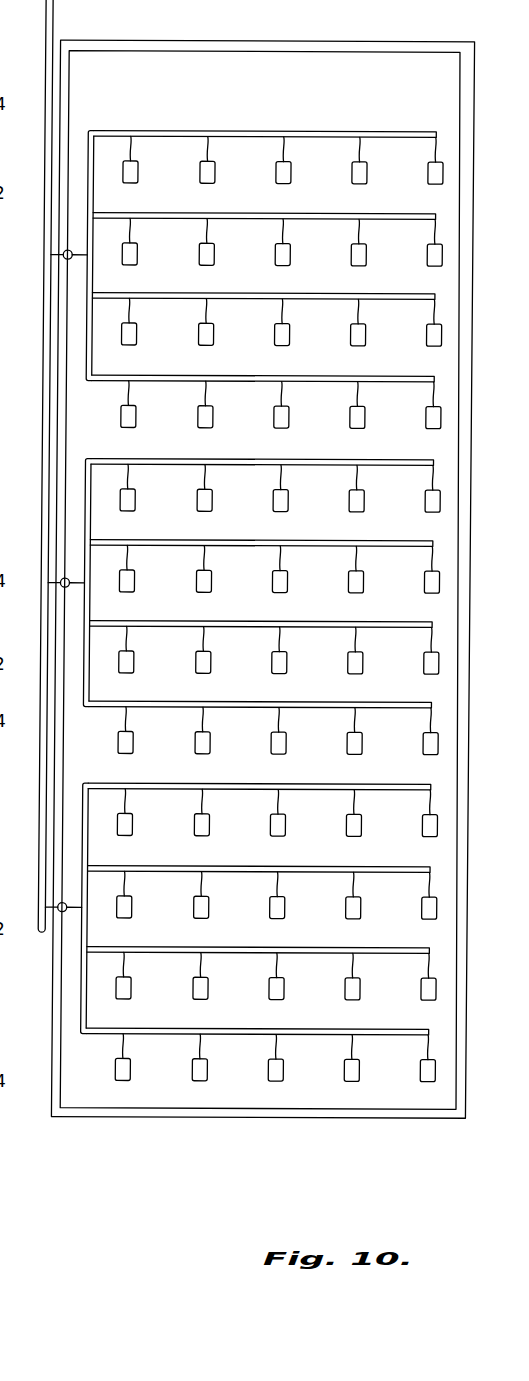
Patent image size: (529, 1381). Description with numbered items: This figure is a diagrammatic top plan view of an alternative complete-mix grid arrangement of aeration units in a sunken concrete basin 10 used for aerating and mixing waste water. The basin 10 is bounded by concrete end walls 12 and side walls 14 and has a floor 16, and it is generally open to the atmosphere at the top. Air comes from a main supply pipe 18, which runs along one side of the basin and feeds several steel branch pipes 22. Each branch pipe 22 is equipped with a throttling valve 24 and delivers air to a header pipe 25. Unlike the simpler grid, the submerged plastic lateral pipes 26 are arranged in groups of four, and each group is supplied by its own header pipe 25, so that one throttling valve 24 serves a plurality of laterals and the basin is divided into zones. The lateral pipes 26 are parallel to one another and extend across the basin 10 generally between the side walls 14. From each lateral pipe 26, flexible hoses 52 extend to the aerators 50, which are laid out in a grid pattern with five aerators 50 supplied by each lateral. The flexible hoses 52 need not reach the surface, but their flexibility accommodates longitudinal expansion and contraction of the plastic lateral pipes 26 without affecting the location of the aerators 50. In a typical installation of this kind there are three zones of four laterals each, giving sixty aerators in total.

The basin 10 is at (255, 34).
The end walls 12 is at (158, 23).
The side walls 14 is at (63, 405).
The floor 16 is at (331, 516).
The main supply pipe 18 is at (59, 6).
The branch pipe 22 is at (80, 262).
The throttling valve 24 is at (63, 252).
The header pipe 25 is at (91, 150).
The lateral pipe 26 is at (231, 213).
The aerator 50 is at (351, 340).
The flexible hose 52 is at (205, 151).